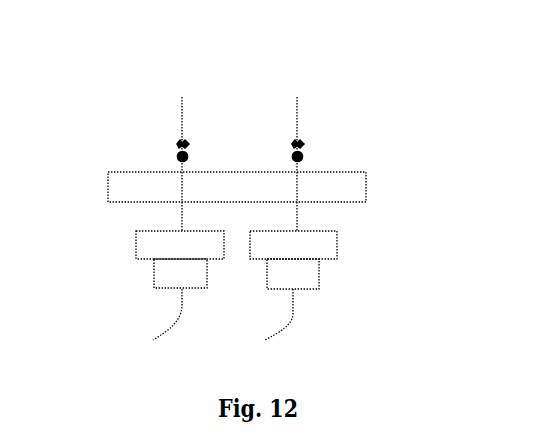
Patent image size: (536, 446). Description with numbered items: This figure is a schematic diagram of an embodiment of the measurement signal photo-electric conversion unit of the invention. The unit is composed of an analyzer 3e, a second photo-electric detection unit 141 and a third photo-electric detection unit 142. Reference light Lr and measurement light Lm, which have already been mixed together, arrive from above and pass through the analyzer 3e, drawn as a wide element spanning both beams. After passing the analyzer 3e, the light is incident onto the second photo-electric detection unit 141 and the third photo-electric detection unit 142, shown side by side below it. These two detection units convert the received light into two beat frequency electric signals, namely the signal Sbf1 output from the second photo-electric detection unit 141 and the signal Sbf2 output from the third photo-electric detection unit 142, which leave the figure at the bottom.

The analyzer 3e is at (366, 192).
The second photo-electric detection unit 141 is at (136, 241).
The third photo-electric detection unit 142 is at (337, 248).
The reference light Lr is at (181, 144).
The measurement light Lm is at (298, 145).
The beat frequency electric signal Sbf1 is at (143, 329).
The beat frequency electric signal Sbf2 is at (259, 329).